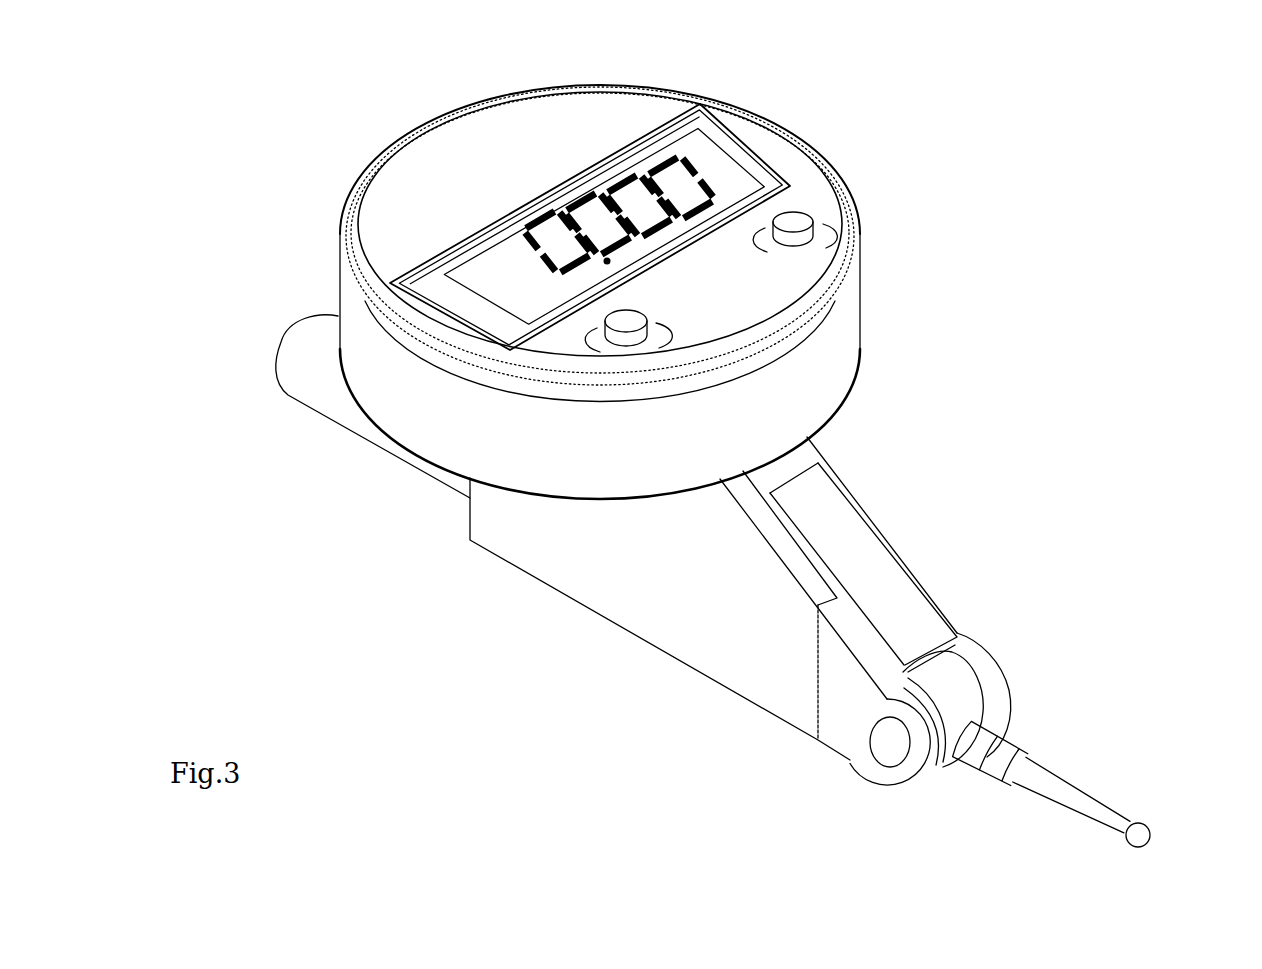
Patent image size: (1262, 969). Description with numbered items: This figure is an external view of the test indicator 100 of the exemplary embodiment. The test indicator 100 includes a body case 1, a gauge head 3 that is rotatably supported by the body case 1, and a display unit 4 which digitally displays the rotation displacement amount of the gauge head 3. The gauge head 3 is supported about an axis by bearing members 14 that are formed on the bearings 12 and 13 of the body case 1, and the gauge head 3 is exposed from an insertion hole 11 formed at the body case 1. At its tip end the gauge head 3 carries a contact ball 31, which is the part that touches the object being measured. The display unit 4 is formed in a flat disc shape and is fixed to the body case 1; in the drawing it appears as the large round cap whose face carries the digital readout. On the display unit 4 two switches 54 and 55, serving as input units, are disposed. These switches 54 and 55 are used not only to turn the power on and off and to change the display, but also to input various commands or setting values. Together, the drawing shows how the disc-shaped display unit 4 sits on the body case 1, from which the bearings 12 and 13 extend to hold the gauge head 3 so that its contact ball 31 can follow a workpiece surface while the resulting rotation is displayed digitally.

The test indicator 100 is at (1045, 287).
The display unit 4 is at (442, 142).
The switch 54 is at (800, 217).
The switch 55 is at (623, 320).
The body case 1 is at (887, 530).
The insertion hole 11 is at (960, 657).
The bearing 12 is at (833, 740).
The bearing 13 is at (987, 675).
The bearing member 14 is at (887, 747).
The gauge head 3 is at (1080, 796).
The contact ball 31 is at (1150, 837).